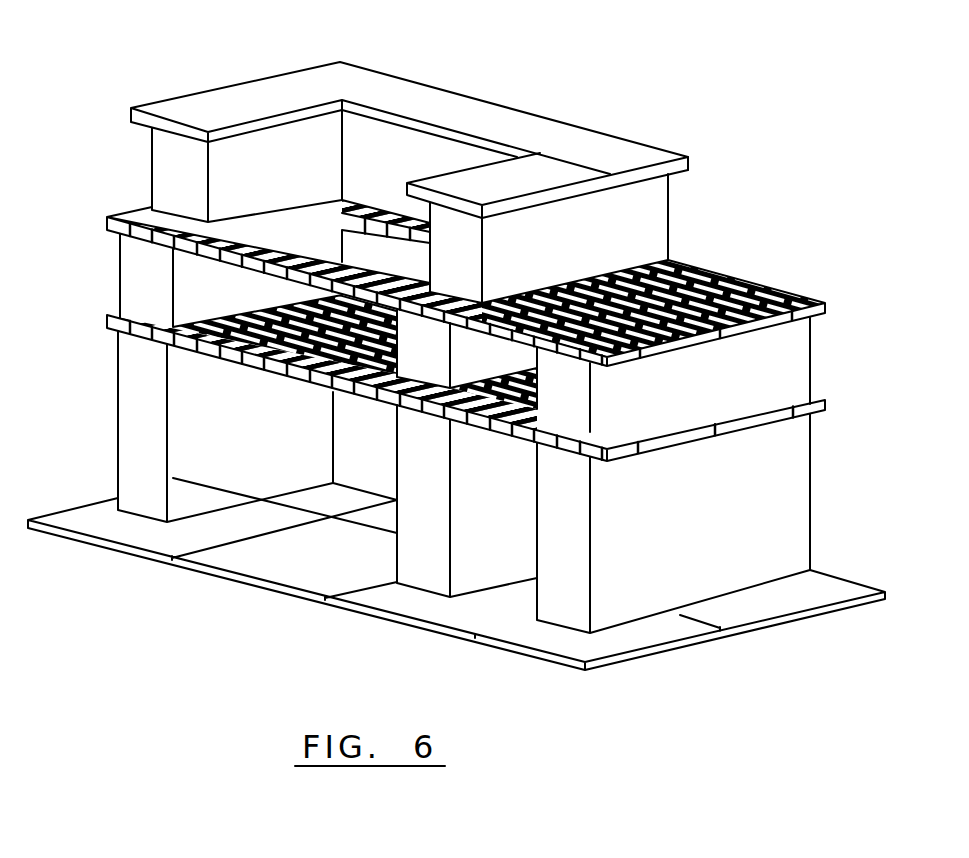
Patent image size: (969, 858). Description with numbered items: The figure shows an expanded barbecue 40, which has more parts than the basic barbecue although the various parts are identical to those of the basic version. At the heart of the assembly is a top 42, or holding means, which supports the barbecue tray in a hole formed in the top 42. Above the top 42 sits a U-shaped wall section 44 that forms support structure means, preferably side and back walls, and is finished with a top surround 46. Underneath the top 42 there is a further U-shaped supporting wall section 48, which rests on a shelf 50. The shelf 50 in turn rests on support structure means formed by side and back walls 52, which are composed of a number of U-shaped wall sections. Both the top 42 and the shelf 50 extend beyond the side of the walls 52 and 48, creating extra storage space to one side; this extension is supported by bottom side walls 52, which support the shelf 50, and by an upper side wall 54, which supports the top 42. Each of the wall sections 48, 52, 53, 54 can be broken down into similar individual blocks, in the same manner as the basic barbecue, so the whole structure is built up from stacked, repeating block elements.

The barbecue 40 is at (466, 82).
The top 42 is at (152, 208).
The U-shaped wall section 44 is at (650, 211).
The top surround 46 is at (593, 143).
The U-shaped supporting wall section 48 is at (146, 288).
The shelf 50 is at (815, 412).
The side and back walls 52 is at (146, 416).
The wall section 53 is at (788, 525).
The upper side wall 54 is at (795, 347).